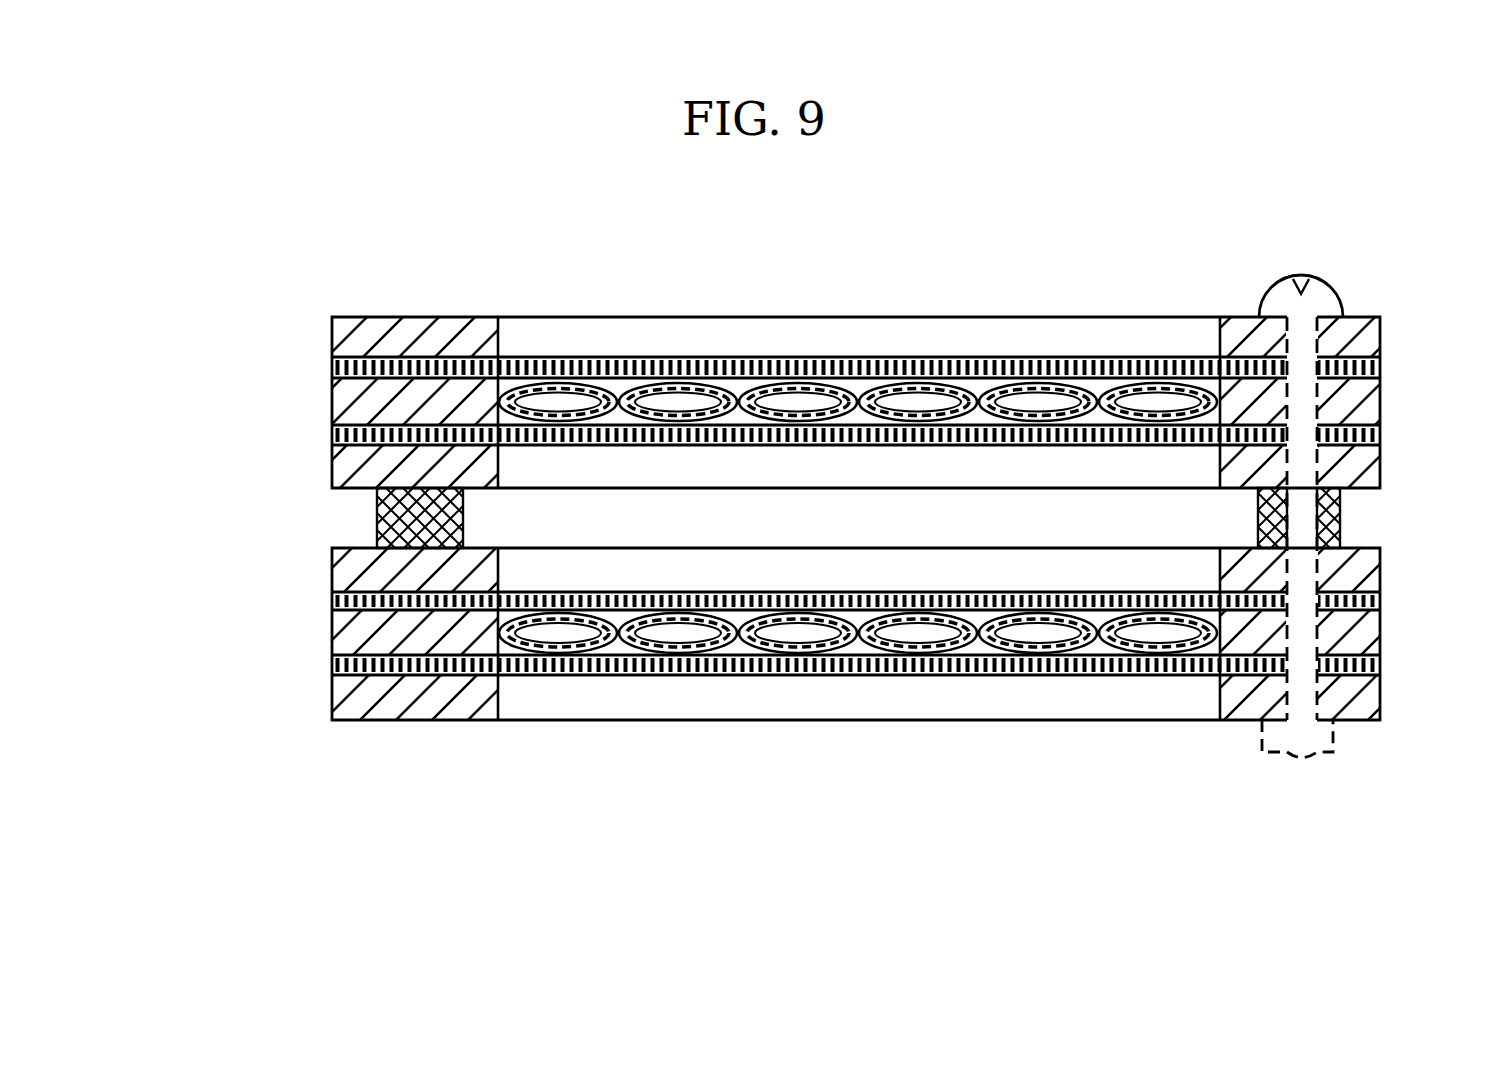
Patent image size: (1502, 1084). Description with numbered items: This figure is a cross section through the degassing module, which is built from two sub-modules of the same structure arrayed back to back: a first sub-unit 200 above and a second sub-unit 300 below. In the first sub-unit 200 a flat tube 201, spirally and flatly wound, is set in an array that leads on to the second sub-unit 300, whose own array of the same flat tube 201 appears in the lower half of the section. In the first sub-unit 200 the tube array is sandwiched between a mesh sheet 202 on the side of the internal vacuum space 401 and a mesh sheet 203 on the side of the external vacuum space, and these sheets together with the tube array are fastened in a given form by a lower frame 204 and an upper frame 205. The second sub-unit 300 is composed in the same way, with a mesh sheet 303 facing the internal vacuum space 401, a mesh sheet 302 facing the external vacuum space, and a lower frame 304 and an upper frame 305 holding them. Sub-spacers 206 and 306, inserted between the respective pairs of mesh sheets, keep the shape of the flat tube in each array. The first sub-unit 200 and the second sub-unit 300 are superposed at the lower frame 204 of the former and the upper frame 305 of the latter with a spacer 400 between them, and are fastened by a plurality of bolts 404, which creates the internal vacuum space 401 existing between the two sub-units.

The first sub-unit 200 is at (238, 406).
The flat tube 201 is at (1150, 398).
The mesh sheet 202 is at (880, 385).
The mesh sheet 203 is at (742, 378).
The lower frame 204 is at (400, 468).
The upper frame 205 is at (465, 330).
The sub-spacer 206 is at (345, 403).
The second sub-unit 300 is at (238, 658).
The mesh sheet 302 is at (780, 672).
The mesh sheet 303 is at (1038, 610).
The lower frame 304 is at (465, 700).
The upper frame 305 is at (405, 575).
The sub-spacer 306 is at (345, 635).
The spacer 400 is at (370, 523).
The internal vacuum space 401 is at (930, 520).
The bolt 404 is at (1330, 290).